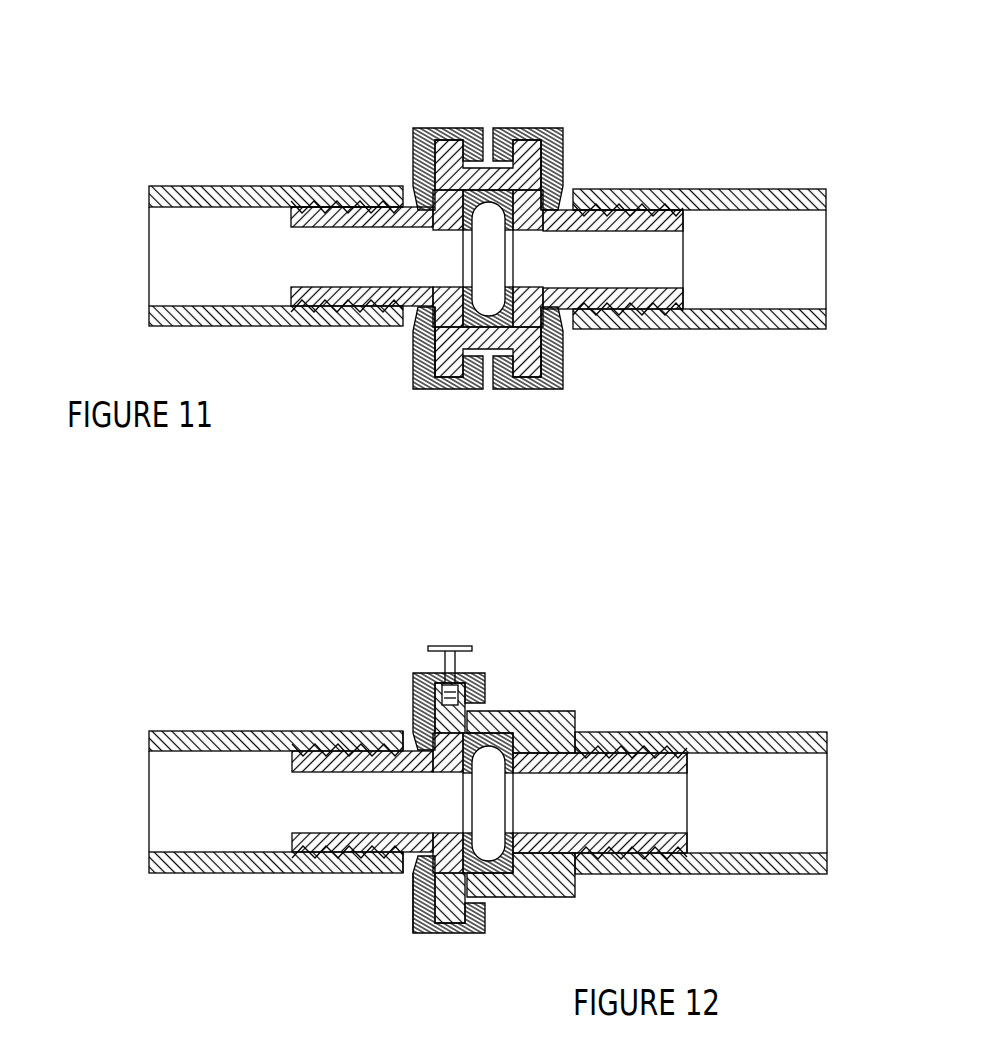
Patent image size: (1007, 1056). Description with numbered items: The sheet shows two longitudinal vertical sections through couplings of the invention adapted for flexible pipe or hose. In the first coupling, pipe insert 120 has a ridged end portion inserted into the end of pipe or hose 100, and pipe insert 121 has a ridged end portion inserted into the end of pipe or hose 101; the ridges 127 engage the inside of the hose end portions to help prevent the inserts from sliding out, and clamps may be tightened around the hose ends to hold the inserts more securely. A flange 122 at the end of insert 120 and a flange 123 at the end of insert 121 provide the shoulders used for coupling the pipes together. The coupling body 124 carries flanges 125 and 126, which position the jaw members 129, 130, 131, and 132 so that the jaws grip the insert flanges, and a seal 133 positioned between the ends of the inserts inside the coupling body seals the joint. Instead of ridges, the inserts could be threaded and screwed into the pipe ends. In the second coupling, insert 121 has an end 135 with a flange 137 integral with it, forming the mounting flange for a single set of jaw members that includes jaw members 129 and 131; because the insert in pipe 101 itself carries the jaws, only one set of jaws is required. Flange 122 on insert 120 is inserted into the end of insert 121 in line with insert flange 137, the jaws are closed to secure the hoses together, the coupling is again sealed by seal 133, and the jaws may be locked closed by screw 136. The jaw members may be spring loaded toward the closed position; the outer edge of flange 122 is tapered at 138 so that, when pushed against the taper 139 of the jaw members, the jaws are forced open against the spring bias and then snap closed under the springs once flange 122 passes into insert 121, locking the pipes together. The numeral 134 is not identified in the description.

In FIG. 11, the pipe or hose 100 is at (190, 186).
In FIG. 12, the pipe or hose 100 is at (192, 731).
In FIG. 11, the pipe or hose 101 is at (718, 188).
In FIG. 12, the pipe or hose 101 is at (697, 732).
In FIG. 11, the pipe insert 120 is at (322, 192).
In FIG. 12, the pipe insert 120 is at (363, 746).
In FIG. 11, the pipe insert 121 is at (672, 231).
In FIG. 12, the pipe insert 121 is at (647, 773).
In FIG. 11, the flange 122 is at (432, 228).
In FIG. 12, the flange 122 is at (453, 773).
In FIG. 11, the flange 123 is at (553, 287).
In FIG. 12, the flange 123 is at (600, 803).
In FIG. 11, the coupling body 124 is at (560, 364).
In FIG. 11, the flange 125 is at (430, 147).
In FIG. 11, the flange 126 is at (523, 142).
In FIG. 11, the ridges 127 is at (322, 194).
In FIG. 11, the jaw member 129 is at (420, 128).
In FIG. 12, the jaw member 129 is at (417, 673).
In FIG. 11, the jaw member 130 is at (557, 141).
In FIG. 11, the jaw member 131 is at (413, 377).
In FIG. 12, the jaw member 131 is at (420, 933).
In FIG. 11, the jaw member 132 is at (558, 392).
In FIG. 11, the seal 133 is at (483, 205).
In FIG. 12, the seal 133 is at (487, 748).
In FIG. 11, the lower threads 134 is at (407, 330).
In FIG. 12, the lower threads 134 is at (403, 876).
In FIG. 12, the end of insert 135 is at (568, 740).
In FIG. 12, the screw 136 is at (472, 650).
In FIG. 12, the flange 137 is at (413, 917).
In FIG. 12, the taper 138 is at (480, 708).
In FIG. 12, the taper 139 is at (407, 773).